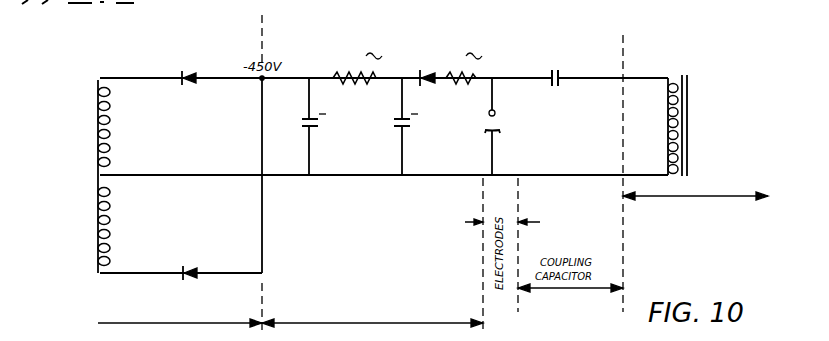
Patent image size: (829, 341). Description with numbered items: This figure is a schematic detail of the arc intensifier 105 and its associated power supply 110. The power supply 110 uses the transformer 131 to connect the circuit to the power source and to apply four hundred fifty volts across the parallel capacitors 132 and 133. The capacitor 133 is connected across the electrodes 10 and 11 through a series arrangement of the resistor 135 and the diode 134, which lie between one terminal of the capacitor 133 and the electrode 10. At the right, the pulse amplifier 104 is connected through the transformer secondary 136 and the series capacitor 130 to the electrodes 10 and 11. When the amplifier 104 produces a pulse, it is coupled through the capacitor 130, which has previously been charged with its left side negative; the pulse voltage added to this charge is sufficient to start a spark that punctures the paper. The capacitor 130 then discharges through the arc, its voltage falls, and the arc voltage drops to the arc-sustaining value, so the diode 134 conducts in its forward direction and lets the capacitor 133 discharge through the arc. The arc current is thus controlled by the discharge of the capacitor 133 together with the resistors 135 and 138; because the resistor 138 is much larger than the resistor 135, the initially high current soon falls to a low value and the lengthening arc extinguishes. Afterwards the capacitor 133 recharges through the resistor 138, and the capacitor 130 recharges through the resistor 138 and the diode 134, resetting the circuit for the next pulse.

The transformer 131 is at (93, 81).
The resistor 138 is at (335, 74).
The diode 134 is at (420, 68).
The resistor 135 is at (445, 72).
The capacitor 132 is at (298, 125).
The capacitor 133 is at (414, 123).
The series capacitor 130 is at (562, 85).
The transformer secondary 136 is at (672, 73).
The electrode 10 is at (497, 109).
The electrode 11 is at (497, 133).
The power supply 110 is at (180, 309).
The intensifier 105 is at (372, 309).
The pulse amplifier 104 is at (695, 214).